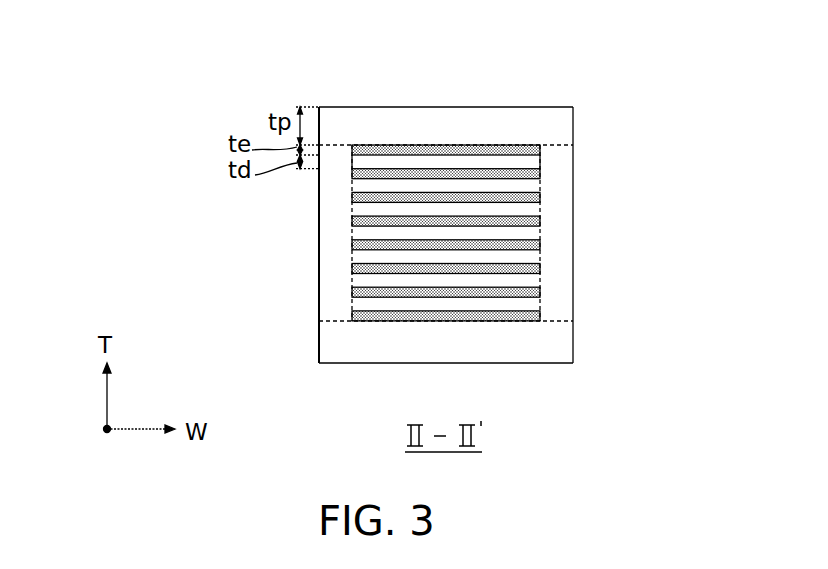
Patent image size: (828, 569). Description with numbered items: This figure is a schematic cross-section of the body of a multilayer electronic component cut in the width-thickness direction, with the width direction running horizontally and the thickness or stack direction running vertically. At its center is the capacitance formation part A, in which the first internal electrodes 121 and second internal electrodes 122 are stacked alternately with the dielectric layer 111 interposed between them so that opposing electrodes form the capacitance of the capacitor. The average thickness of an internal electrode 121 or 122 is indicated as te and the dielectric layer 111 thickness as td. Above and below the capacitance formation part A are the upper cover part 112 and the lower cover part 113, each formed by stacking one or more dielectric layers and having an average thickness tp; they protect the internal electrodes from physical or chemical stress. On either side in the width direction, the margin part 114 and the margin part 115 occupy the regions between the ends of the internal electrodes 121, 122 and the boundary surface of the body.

The upper cover part 112 is at (451, 125).
The first internal electrode 121 is at (538, 147).
The dielectric layer 111 is at (538, 161).
The second internal electrode 122 is at (538, 173).
The margin part 115 is at (565, 260).
The lower cover part 113 is at (565, 340).
The margin part 114 is at (335, 275).
The capacitance formation part A is at (352, 236).